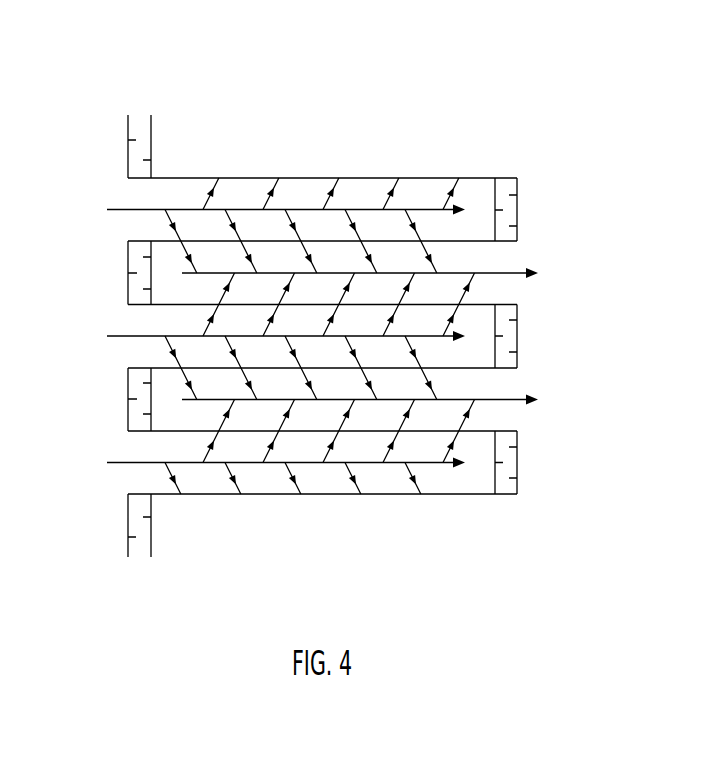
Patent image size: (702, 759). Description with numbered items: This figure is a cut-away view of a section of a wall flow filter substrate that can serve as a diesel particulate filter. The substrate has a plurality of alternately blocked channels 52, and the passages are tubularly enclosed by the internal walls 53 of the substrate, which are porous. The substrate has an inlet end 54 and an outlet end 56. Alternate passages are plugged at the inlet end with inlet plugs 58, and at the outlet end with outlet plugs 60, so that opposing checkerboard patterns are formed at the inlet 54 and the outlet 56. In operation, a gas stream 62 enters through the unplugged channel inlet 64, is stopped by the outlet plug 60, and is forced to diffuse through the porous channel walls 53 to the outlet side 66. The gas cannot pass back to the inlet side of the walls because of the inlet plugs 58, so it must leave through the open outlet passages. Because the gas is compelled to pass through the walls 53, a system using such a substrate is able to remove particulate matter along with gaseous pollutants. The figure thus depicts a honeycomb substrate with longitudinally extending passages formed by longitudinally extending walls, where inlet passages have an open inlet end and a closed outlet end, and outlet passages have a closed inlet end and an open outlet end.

The alternately blocked channels 52 is at (165, 253).
The internal walls 53 is at (312, 247).
The inlet end 54 is at (113, 96).
The outlet end 56 is at (540, 158).
The inlet plugs 58 is at (133, 155).
The outlet plugs 60 is at (517, 212).
The gas stream 62 is at (190, 210).
The unplugged channel inlet 64 is at (150, 203).
The outlet side 66 is at (496, 299).